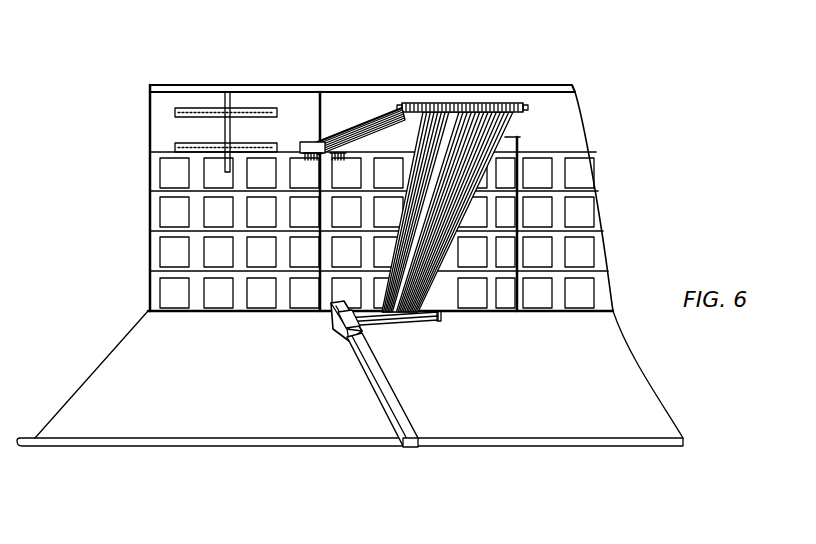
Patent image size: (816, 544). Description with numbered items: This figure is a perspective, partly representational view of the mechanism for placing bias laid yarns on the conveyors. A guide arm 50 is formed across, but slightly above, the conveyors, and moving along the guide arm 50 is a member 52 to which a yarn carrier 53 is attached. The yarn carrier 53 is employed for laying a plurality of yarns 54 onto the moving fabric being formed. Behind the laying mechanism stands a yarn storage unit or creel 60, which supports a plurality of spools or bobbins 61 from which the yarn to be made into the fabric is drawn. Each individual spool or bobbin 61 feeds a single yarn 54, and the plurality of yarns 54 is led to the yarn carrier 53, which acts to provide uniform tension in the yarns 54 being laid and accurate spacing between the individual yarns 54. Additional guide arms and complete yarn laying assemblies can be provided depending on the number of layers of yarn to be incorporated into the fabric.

The guide arm 50 is at (385, 413).
The member 52 is at (337, 330).
The yarn carrier 53 is at (440, 326).
The yarns 54 is at (380, 118).
The yarn storage unit or creel 60 is at (563, 113).
The spools or bobbins 61 is at (173, 170).